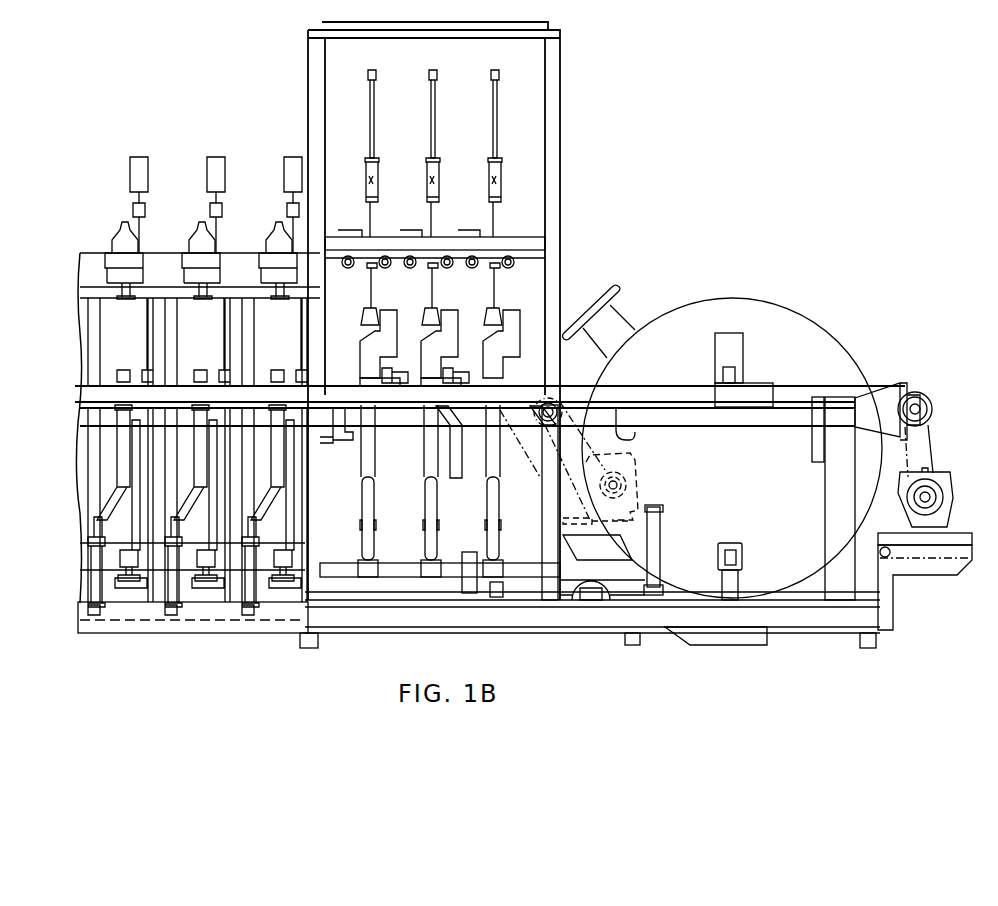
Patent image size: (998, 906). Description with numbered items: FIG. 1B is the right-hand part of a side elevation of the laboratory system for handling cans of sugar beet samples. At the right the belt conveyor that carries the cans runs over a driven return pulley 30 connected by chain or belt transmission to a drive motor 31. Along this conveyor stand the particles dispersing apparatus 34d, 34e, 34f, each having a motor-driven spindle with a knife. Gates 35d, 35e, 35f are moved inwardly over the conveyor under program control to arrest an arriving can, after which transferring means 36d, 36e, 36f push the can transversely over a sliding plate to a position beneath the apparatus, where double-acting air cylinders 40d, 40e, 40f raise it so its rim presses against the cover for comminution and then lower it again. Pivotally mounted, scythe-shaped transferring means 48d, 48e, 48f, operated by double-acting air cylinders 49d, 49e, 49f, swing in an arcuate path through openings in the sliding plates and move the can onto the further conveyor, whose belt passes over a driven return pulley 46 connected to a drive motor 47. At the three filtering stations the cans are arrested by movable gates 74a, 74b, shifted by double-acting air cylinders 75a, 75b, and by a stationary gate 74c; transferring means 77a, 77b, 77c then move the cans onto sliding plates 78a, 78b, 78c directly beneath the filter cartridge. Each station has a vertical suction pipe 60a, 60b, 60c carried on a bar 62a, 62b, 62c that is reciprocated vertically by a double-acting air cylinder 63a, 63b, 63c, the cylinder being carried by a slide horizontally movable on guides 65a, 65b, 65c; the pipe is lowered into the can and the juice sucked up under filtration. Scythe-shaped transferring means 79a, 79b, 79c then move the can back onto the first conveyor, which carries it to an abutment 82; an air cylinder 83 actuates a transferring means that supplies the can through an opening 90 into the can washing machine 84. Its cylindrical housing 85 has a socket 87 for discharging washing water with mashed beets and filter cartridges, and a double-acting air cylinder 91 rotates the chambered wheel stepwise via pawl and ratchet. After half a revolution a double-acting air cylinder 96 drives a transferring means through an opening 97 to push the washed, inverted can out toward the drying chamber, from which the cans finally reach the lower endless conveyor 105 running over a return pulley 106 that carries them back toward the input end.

The particles dispersing apparatus 34d is at (125, 221).
The particles dispersing apparatus 34e is at (202, 221).
The particles dispersing apparatus 34f is at (279, 221).
The gate 35d is at (147, 368).
The gate 35e is at (224, 368).
The gate 35f is at (301, 368).
The transferring means 36d is at (126, 370).
The transferring means 36e is at (203, 370).
The transferring means 36f is at (280, 370).
The scythe-shaped transferring means 48d is at (118, 461).
The scythe-shaped transferring means 48e is at (202, 486).
The scythe-shaped transferring means 48f is at (280, 455).
The double-acting air cylinder 49d is at (95, 575).
The double-acting air cylinder 49e is at (167, 577).
The double-acting air cylinder 49f is at (252, 577).
The double-acting air cylinder 40d is at (127, 542).
The double-acting air cylinder 40e is at (207, 540).
The double-acting air cylinder 40f is at (285, 540).
The bar 62a is at (374, 109).
The bar 62b is at (435, 109).
The bar 62c is at (497, 109).
The double-acting air cylinder 63a is at (378, 160).
The double-acting air cylinder 63b is at (439, 160).
The double-acting air cylinder 63c is at (501, 160).
The guides 65a is at (357, 271).
The guides 65b is at (374, 297).
The guides 65c is at (437, 297).
The suction pipe 60a is at (416, 268).
The suction pipe 60b is at (479, 268).
The suction pipe 60c is at (511, 262).
The transferring means 77a is at (376, 342).
The transferring means 77b is at (446, 342).
The transferring means 77c is at (531, 342).
The gate 74a is at (380, 372).
The gate 74b is at (501, 372).
The stationary gate 74c is at (530, 385).
The double-acting air cylinder 75a is at (396, 382).
The double-acting air cylinder 75b is at (506, 382).
The sliding plate 78a is at (372, 445).
The sliding plate 78b is at (430, 460).
The sliding plate 78c is at (492, 445).
The scythe-shaped transferring means 79a is at (372, 500).
The scythe-shaped transferring means 79b is at (430, 543).
The scythe-shaped transferring means 79c is at (492, 500).
The driven return pulley 46 is at (545, 413).
The drive motor 47 is at (630, 473).
The can washing machine 84 is at (749, 300).
The cylindrical housing 85 is at (818, 330).
The opening 90 is at (743, 345).
The air cylinder 83 is at (740, 374).
The abutment 82 is at (753, 378).
The driven return pulley 30 is at (930, 400).
The drive motor 31 is at (945, 488).
The double-acting air cylinder 91 is at (658, 556).
The double-acting air cylinder 96 is at (729, 548).
The opening 97 is at (745, 561).
The endless conveyor 105 is at (520, 577).
The return pulley 106 is at (608, 597).
The socket 87 is at (745, 627).